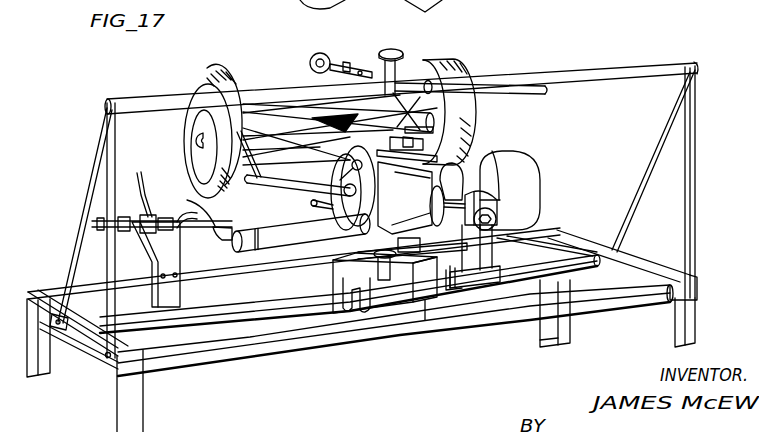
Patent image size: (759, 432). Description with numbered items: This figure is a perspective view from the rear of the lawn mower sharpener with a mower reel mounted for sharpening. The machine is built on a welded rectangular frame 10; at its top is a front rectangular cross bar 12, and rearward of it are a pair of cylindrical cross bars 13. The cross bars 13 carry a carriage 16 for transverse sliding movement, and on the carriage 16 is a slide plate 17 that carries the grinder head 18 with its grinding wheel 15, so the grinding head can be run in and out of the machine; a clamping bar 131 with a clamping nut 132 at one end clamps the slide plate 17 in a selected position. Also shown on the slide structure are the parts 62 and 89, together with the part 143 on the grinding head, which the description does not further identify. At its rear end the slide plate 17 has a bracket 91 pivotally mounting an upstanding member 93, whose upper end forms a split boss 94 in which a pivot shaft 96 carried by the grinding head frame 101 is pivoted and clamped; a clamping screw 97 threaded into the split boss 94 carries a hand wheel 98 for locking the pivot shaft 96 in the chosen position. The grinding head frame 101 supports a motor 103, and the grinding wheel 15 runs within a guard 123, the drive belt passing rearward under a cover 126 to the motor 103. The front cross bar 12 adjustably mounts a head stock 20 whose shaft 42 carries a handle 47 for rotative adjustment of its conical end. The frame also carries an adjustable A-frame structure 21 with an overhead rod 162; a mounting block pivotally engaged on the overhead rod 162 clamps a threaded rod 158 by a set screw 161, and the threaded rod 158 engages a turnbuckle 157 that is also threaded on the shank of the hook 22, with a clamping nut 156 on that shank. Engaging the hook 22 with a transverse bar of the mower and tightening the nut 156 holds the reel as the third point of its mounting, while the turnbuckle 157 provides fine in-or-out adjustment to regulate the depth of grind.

The rectangular frame 10 is at (107, 405).
The front rectangular cross bar 12 is at (236, 291).
The cylindrical cross bars 13 is at (229, 313).
The grinding wheel 15 is at (333, 162).
The carriage 16 is at (423, 309).
The slide plate 17 is at (440, 266).
The grinder head 18 is at (307, 198).
The head stock 20 is at (158, 204).
The A-frame structure 21 is at (700, 147).
The hook 22 is at (300, 78).
The shaft 42 is at (188, 245).
The handle 47 is at (145, 156).
The block 62 is at (393, 310).
The clamp bracket 89 is at (345, 293).
The bracket 91 is at (465, 285).
The upstanding member 93 is at (495, 250).
The split boss 94 is at (490, 198).
The pivot shaft 96 is at (498, 220).
The clamping screw 97 is at (452, 192).
The hand wheel 98 is at (443, 200).
The grinding head frame 101 is at (459, 190).
The motor 103 is at (501, 165).
The guard 123 is at (341, 221).
The cover 126 is at (376, 207).
The clamping bar 131 is at (415, 243).
The clamping nut 132 is at (375, 252).
The head plate 143 is at (368, 172).
The clamping nut 156 is at (321, 55).
The turnbuckle 157 is at (338, 62).
The threaded rod 158 is at (417, 76).
The set screw 161 is at (388, 52).
The overhead rod 162 is at (540, 76).